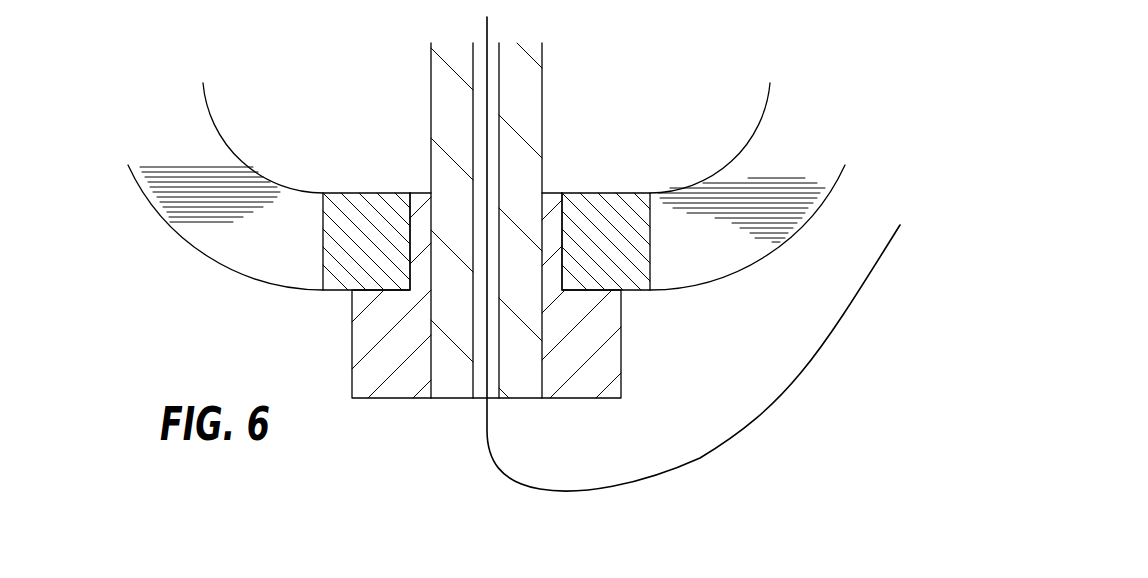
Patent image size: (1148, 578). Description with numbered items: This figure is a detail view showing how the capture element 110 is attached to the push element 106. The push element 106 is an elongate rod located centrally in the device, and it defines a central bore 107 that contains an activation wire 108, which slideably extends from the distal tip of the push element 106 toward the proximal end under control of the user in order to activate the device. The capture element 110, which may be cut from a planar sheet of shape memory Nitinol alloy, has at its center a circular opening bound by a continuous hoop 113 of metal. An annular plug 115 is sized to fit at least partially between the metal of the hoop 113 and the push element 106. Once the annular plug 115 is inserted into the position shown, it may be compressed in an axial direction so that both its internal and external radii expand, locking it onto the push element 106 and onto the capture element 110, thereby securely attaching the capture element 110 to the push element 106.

The push element 106 is at (523, 117).
The central bore 107 is at (480, 107).
The activation wire 108 is at (487, 79).
The capture element 110 is at (242, 250).
The hoop 113 is at (367, 213).
The annular plug 115 is at (400, 380).